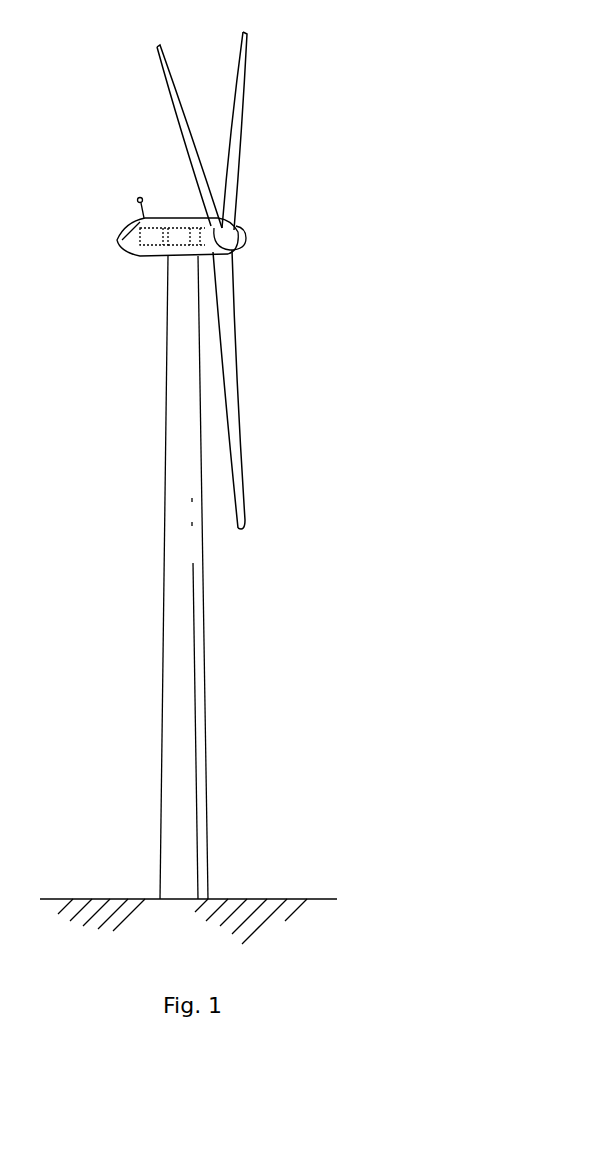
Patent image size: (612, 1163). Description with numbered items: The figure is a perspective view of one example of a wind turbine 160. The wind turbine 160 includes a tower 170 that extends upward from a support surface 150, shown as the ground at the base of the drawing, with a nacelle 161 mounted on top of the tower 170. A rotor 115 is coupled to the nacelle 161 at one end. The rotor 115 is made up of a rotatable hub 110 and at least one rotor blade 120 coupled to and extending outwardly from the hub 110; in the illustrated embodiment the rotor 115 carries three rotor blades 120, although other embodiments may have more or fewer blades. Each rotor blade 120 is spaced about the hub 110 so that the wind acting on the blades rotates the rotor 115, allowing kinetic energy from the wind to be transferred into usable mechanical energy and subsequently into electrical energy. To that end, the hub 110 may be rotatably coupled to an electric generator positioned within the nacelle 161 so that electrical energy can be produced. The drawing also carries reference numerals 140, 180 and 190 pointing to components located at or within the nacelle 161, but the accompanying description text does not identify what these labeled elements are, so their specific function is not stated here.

The hub 110 is at (245, 242).
The rotor 115 is at (249, 208).
The rotor blade 120 is at (238, 62).
The controller 140 is at (147, 240).
The support surface 150 is at (103, 898).
The wind turbine 160 is at (224, 481).
The nacelle 161 is at (150, 257).
The tower 170 is at (172, 665).
The sensor 180 is at (188, 240).
The sensor 190 is at (172, 240).